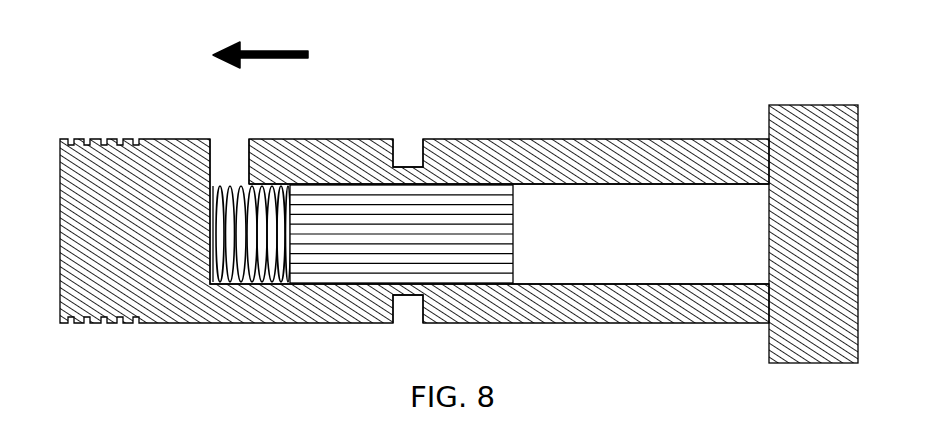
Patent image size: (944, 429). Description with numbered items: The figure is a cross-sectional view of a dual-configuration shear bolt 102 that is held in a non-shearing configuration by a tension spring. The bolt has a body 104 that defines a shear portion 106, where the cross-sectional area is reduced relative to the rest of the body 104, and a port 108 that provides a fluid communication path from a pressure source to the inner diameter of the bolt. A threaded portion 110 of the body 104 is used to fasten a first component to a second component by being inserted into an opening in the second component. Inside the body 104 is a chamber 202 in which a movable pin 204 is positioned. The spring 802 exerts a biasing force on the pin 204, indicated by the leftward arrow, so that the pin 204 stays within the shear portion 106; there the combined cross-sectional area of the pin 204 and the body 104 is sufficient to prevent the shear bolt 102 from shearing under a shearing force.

The dual-configuration shear bolt 102 is at (768, 70).
The body 104 is at (543, 134).
The shear portion 106 is at (409, 151).
The port 108 is at (215, 137).
The threaded portion 110 is at (115, 123).
The chamber 202 is at (665, 266).
The movable pin 204 is at (525, 243).
The spring 802 is at (228, 179).